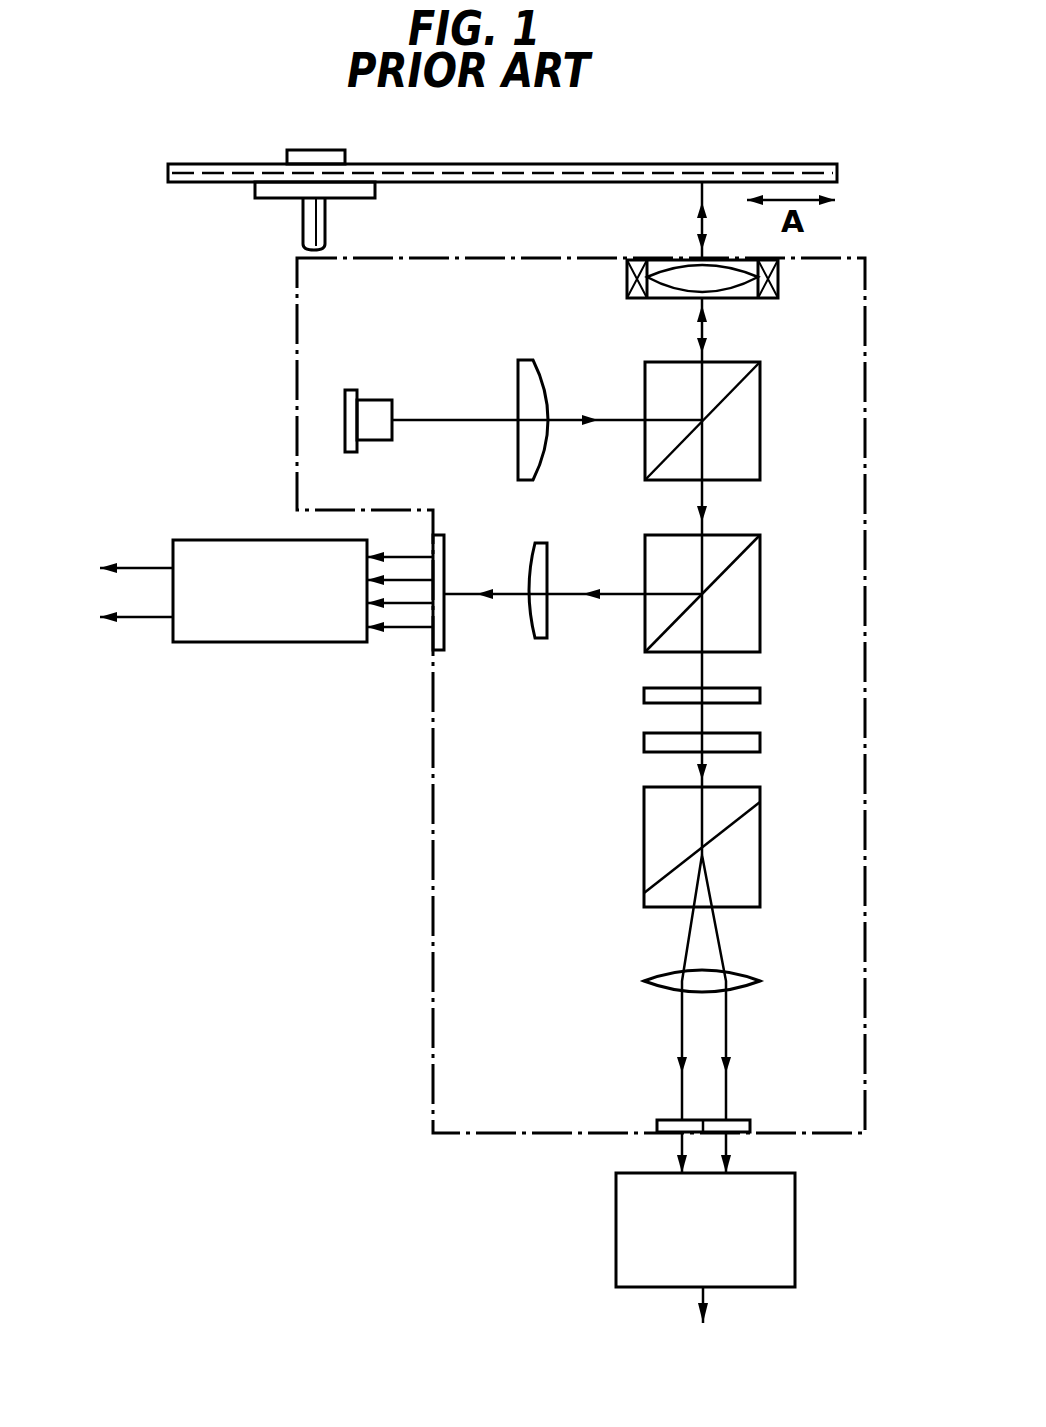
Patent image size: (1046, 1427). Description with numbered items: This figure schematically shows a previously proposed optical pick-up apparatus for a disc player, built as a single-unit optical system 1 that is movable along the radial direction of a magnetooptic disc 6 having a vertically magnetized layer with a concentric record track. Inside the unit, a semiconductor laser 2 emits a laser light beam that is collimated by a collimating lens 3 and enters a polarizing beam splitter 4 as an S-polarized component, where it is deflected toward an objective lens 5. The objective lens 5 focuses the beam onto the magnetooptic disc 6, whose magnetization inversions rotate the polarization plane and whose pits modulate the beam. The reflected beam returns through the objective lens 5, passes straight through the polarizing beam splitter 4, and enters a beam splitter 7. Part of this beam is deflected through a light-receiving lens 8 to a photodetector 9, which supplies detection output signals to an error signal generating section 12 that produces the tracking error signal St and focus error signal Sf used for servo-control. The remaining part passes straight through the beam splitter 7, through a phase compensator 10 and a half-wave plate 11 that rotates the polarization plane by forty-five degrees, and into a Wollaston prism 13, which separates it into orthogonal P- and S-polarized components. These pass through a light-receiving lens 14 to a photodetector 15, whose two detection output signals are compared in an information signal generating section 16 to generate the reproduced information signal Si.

The optical system 1 is at (432, 958).
The semiconductor laser 2 is at (388, 410).
The collimating lens 3 is at (521, 380).
The polarizing beam splitter 4 is at (760, 460).
The objective lens 5 is at (666, 268).
The magnetooptic disc 6 is at (603, 164).
The beam splitter 7 is at (760, 630).
The light-receiving lens 8 is at (546, 628).
The photodetector 9 is at (443, 638).
The phase compensator 10 is at (760, 695).
The half-wave plate 11 is at (760, 743).
The error signal generating section 12 is at (330, 643).
The Wollaston prism 13 is at (760, 885).
The light-receiving lens 14 is at (748, 975).
The photodetector 15 is at (746, 1118).
The information signal generating section 16 is at (795, 1213).